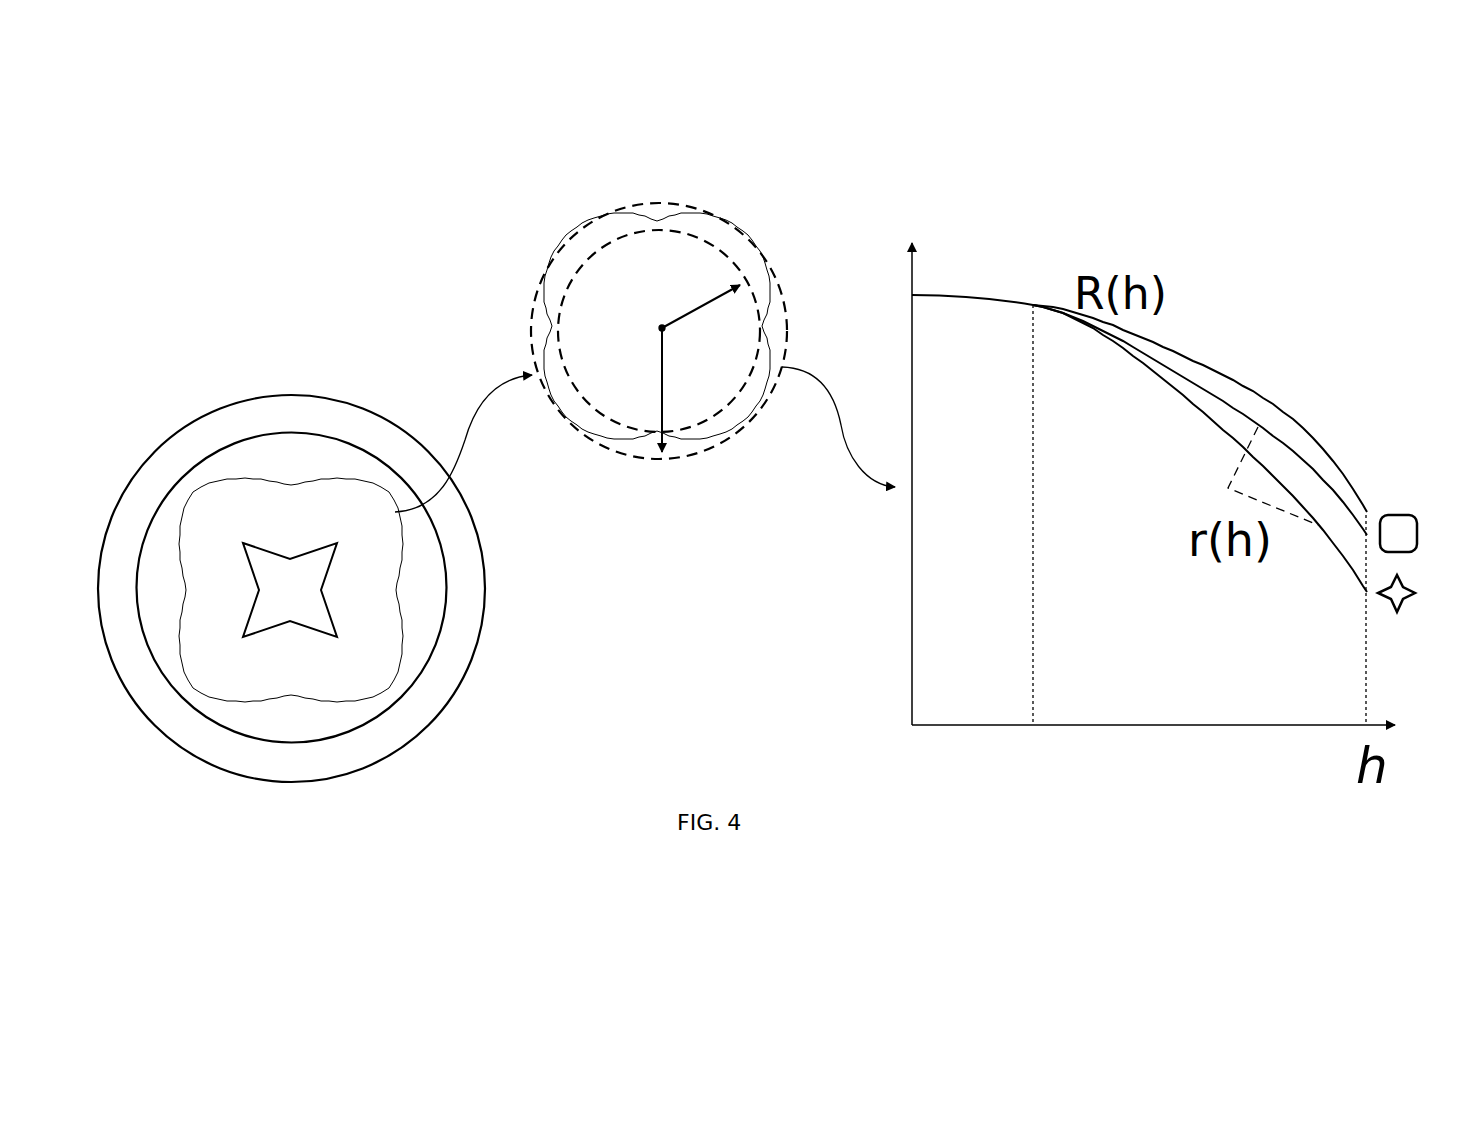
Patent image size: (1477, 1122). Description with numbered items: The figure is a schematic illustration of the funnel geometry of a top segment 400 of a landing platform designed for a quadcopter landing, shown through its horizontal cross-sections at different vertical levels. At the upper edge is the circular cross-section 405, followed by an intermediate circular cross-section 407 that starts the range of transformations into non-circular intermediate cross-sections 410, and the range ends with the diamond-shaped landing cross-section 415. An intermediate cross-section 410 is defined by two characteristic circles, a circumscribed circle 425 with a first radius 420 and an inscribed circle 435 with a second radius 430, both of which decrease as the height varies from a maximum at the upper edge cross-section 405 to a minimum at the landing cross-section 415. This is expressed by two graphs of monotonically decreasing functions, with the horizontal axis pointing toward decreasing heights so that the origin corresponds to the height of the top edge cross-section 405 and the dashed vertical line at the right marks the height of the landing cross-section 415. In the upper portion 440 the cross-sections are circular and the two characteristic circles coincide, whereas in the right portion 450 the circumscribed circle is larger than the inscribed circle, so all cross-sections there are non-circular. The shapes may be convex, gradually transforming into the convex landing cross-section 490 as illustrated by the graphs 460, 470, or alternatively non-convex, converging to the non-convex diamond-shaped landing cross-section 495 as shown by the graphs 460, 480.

The top segment 400 is at (291, 537).
The circular cross-section 405 is at (350, 407).
The intermediate circular cross-section 407 is at (218, 447).
The non-circular intermediate cross-section 410 is at (397, 562).
The diamond-shaped landing cross-section 415 is at (290, 590).
The first radius 420 is at (663, 400).
The circumscribed circle 425 is at (668, 205).
The second radius 430 is at (713, 295).
The inscribed circle 435 is at (588, 255).
The upper portion 440 is at (967, 496).
The right portion 450 is at (1082, 515).
The graph 460 is at (1170, 350).
The graph 470 is at (1228, 408).
The graph 480 is at (1268, 468).
The convex landing cross-section 490 is at (1400, 515).
The non-convex diamond-shaped landing cross-section 495 is at (1405, 604).